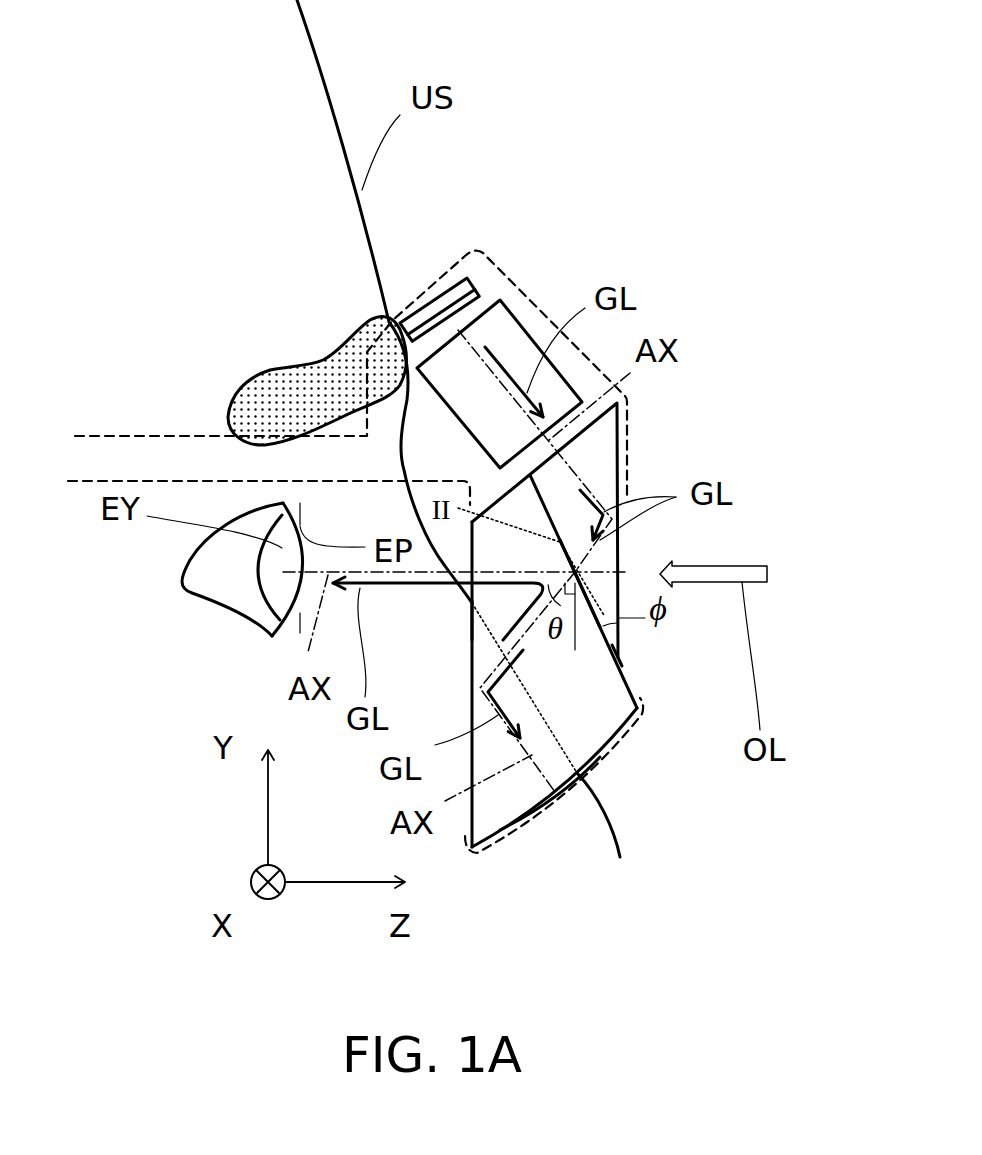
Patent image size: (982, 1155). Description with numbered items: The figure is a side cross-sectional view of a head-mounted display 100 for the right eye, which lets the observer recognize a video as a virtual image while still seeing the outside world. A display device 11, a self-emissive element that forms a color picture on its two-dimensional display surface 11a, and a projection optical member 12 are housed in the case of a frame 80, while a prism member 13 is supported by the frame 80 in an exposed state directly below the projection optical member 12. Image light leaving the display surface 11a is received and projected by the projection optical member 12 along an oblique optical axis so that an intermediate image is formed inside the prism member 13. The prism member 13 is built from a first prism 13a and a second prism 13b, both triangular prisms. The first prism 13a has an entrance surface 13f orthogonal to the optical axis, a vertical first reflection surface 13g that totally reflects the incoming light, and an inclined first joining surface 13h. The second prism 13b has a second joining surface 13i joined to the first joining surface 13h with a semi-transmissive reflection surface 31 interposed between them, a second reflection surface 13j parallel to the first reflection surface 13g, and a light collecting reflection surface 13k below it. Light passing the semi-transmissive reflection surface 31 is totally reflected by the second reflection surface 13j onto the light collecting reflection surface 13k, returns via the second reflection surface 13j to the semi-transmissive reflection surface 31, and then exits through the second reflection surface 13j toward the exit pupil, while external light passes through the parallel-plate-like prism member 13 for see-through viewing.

The head-mounted display 100 is at (658, 247).
The frame 80 is at (130, 436).
The display device 11 is at (468, 276).
The display surface 11a is at (472, 297).
The projection optical member 12 is at (517, 337).
The prism member 13 is at (571, 627).
The first prism 13a is at (600, 470).
The second prism 13b is at (513, 793).
The entrance surface 13f is at (548, 447).
The first reflection surface 13g is at (605, 572).
The first joining surface 13h is at (595, 643).
The second joining surface 13i is at (618, 660).
The second reflection surface 13j is at (472, 619).
The light collecting reflection surface 13k is at (543, 805).
The semi-transmissive reflection surface 31 is at (577, 568).